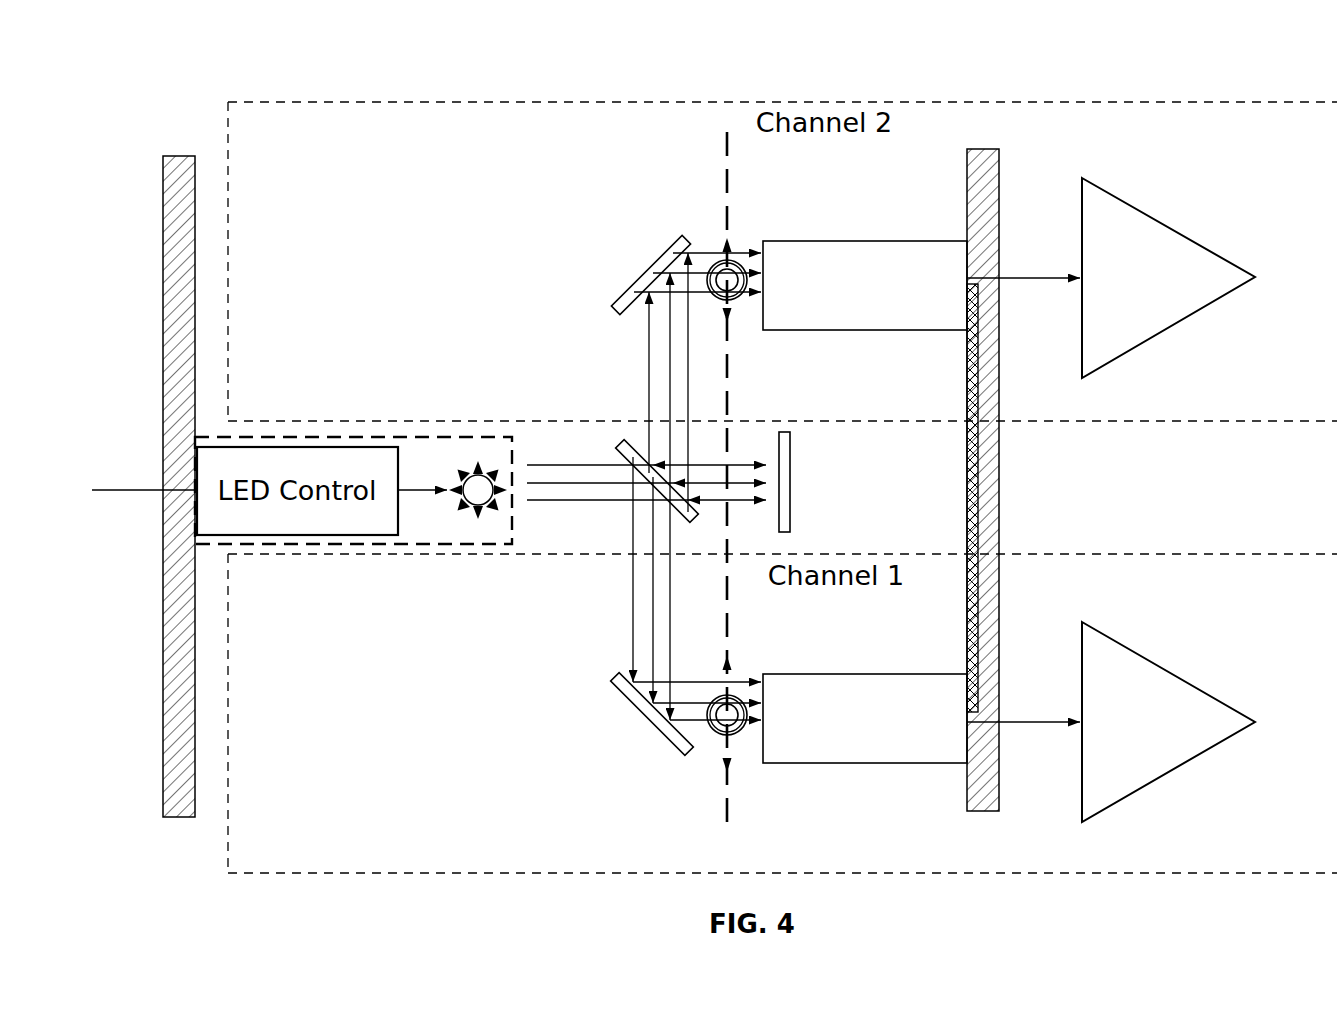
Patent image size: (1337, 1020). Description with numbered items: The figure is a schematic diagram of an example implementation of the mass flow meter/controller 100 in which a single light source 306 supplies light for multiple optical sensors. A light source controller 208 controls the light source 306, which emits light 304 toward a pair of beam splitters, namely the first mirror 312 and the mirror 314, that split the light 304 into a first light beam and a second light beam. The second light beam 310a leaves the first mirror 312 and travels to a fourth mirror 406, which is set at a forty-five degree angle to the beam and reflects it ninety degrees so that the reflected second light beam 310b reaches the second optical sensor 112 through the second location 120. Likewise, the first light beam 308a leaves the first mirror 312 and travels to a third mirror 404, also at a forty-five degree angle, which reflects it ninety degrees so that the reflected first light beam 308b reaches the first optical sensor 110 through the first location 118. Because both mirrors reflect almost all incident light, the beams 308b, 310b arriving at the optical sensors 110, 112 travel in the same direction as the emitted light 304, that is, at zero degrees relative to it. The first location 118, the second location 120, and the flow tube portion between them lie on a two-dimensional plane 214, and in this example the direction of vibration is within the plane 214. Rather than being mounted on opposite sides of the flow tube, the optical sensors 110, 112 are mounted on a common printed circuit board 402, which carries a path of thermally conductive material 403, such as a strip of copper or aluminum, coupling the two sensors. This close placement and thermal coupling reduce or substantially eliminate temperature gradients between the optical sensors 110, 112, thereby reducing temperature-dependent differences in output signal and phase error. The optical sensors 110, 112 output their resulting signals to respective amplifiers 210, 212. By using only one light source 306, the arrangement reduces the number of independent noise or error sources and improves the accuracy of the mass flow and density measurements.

The mass flow meter/controller 100 is at (232, 57).
The light source controller 208 is at (208, 463).
The light source 306 is at (478, 468).
The light 304 is at (557, 478).
The first mirror 312 is at (636, 443).
The second light beam 310a is at (645, 352).
The fourth mirror 406 is at (647, 277).
The second light beam 310b is at (703, 252).
The second location 120 is at (737, 300).
The two-dimensional plane 214 is at (723, 160).
The second optical sensor 112 is at (908, 332).
The printed circuit board 402 is at (993, 480).
The path of thermally conductive material 403 is at (972, 492).
The amplifier 212 is at (1168, 226).
The amplifier 210 is at (1168, 671).
The first optical sensor 110 is at (866, 674).
The first location 118 is at (737, 690).
The mirror 314 is at (793, 468).
The first light beam 308a is at (632, 604).
The third mirror 404 is at (650, 713).
The first light beam 308b is at (707, 746).